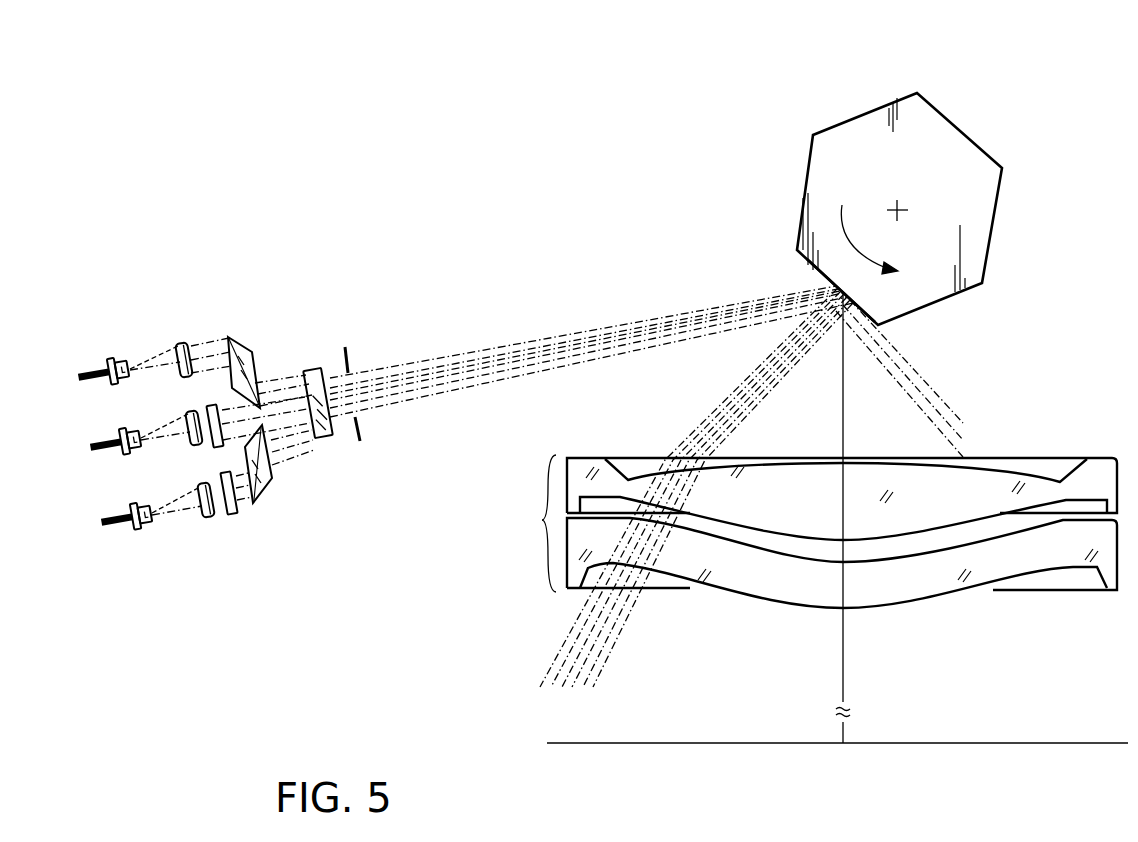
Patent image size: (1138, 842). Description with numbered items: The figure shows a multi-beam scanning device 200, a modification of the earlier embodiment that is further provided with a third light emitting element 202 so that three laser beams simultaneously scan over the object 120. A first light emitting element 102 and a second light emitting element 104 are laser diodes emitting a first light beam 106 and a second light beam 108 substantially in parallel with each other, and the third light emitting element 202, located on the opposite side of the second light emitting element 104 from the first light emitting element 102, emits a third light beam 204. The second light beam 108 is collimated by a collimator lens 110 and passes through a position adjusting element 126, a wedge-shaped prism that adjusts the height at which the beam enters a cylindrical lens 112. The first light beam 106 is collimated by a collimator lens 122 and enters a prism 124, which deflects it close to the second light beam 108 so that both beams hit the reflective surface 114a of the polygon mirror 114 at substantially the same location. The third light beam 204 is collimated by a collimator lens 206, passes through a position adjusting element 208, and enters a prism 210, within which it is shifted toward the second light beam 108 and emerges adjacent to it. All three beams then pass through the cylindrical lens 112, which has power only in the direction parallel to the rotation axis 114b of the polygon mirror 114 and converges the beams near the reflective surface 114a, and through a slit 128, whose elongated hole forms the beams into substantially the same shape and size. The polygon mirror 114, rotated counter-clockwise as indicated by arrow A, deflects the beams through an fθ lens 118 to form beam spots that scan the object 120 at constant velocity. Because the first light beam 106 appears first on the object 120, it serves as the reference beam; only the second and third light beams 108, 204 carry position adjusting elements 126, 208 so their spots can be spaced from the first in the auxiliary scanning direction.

The multi-beam scanning device 200 is at (471, 94).
The first light emitting element 102 is at (108, 357).
The second light emitting element 104 is at (122, 426).
The third light emitting element 202 is at (133, 500).
The first light beam 106 is at (172, 351).
The second light beam 108 is at (170, 444).
The third light beam 204 is at (190, 515).
The collimator lens 122 is at (178, 342).
The collimator lens 110 is at (186, 416).
The collimator lens 206 is at (210, 522).
The prism 124 is at (262, 326).
The prism 210 is at (271, 480).
The position adjusting element 126 is at (219, 446).
The position adjusting element 208 is at (233, 514).
The cylindrical lens 112 is at (323, 437).
The slit 128 is at (349, 360).
The polygon mirror 114 is at (855, 110).
The reflective surface 114a is at (802, 262).
The rotation axis 114b is at (923, 185).
The fθ lens 118 is at (806, 531).
The object 120 is at (665, 743).